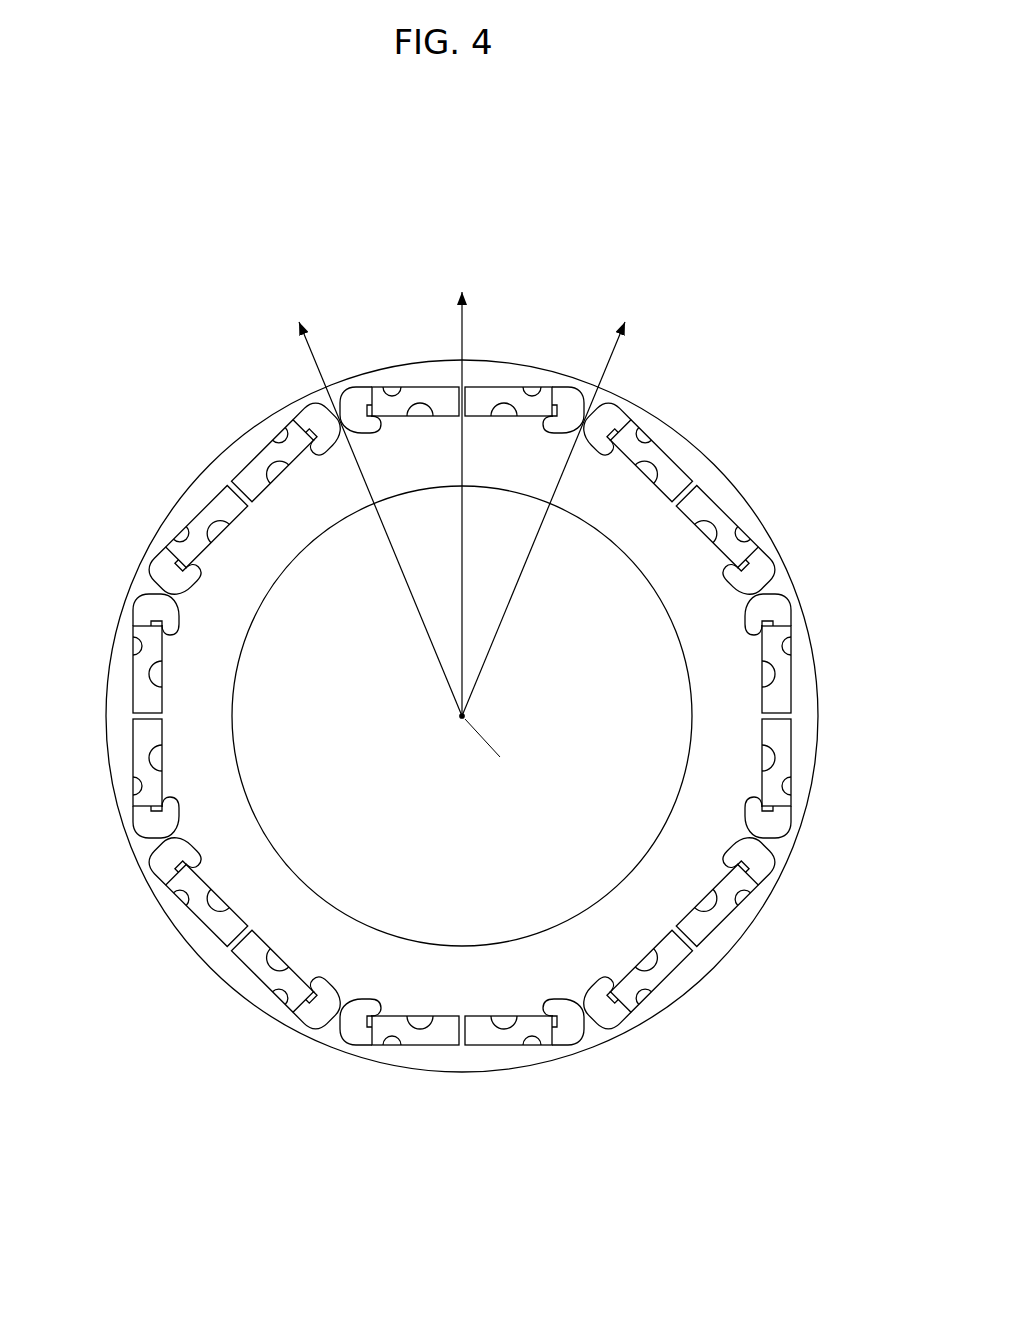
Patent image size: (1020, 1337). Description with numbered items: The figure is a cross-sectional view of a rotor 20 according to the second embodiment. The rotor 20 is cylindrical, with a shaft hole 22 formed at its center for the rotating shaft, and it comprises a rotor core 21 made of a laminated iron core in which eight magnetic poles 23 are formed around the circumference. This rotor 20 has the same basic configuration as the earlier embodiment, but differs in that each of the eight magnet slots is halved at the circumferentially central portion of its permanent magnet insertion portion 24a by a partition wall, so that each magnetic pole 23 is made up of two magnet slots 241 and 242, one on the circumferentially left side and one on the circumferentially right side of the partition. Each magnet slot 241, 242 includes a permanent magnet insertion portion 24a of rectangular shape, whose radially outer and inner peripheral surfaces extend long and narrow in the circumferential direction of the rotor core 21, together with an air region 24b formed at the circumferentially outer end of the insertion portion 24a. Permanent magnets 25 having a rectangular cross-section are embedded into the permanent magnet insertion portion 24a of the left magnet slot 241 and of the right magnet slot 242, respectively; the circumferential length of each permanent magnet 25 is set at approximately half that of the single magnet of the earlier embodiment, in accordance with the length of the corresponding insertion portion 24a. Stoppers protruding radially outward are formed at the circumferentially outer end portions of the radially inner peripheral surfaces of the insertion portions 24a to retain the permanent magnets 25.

The rotor 20 is at (765, 383).
The rotor core 21 is at (807, 632).
The shaft hole 22 is at (305, 882).
The magnetic pole 23 is at (505, 387).
The magnet slot 241 is at (398, 393).
The magnet slot 242 is at (526, 393).
The permanent magnet insertion portion 24a is at (420, 410).
The air region 24b is at (352, 402).
The permanent magnet 25 is at (430, 397).